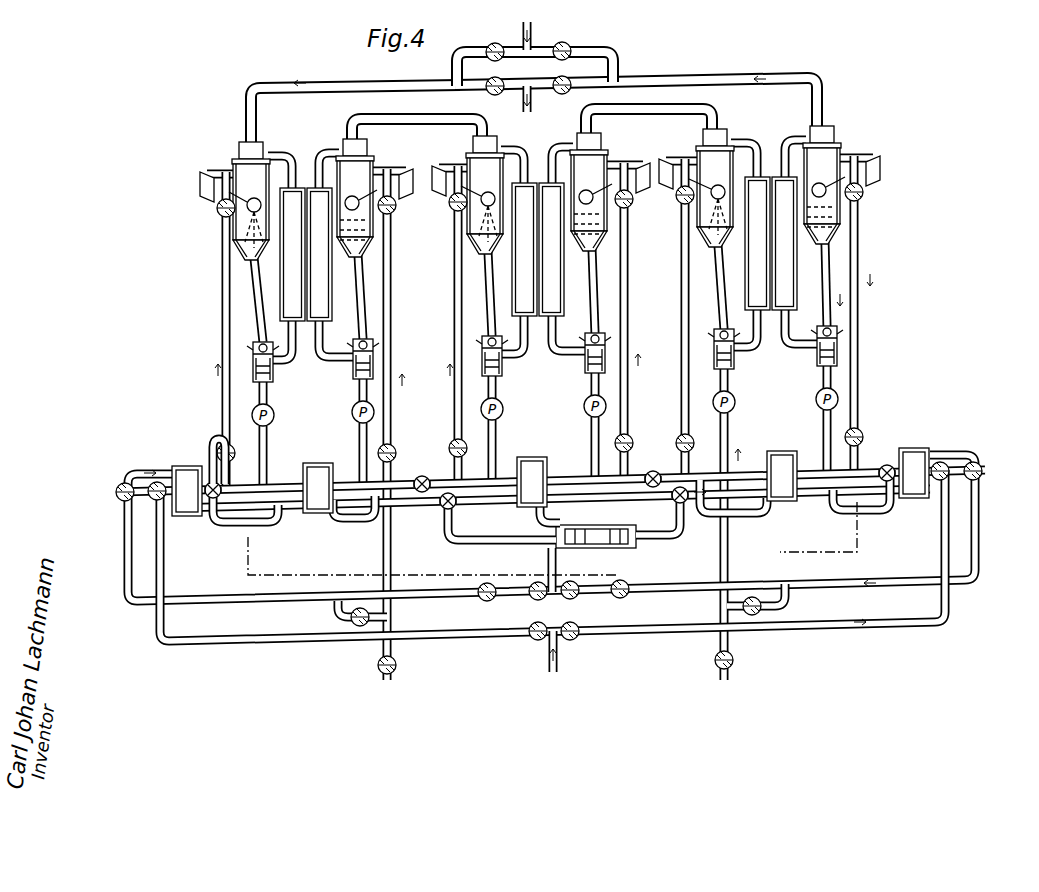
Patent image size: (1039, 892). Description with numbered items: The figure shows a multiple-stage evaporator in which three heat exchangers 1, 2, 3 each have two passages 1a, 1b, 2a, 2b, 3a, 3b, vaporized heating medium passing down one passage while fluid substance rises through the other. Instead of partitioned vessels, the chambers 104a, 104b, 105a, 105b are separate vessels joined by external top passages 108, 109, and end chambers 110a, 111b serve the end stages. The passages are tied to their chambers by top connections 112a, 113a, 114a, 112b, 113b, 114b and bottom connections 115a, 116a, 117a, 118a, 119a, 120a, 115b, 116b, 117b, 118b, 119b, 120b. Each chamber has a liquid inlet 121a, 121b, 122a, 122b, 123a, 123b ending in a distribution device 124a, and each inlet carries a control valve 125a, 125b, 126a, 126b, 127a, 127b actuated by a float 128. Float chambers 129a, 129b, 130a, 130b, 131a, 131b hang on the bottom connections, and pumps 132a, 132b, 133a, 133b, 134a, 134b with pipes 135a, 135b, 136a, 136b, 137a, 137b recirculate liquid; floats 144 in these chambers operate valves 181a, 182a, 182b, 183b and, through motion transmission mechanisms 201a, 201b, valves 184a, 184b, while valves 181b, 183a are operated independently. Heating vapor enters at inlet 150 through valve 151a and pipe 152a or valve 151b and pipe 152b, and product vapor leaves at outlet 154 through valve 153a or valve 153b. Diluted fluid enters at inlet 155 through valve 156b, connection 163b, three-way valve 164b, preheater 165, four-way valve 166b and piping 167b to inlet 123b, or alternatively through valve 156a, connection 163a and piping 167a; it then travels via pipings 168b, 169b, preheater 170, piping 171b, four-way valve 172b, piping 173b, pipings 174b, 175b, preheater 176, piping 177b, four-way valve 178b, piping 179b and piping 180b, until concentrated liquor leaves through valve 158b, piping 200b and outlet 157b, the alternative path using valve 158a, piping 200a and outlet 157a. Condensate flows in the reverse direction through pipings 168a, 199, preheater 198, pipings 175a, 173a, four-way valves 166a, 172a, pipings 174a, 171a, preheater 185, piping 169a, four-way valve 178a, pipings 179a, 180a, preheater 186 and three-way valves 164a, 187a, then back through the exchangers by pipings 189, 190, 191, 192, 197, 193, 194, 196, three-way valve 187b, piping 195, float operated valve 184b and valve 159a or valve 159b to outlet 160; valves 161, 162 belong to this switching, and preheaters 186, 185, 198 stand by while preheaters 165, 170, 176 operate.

The heat exchanger 1 is at (331, 290).
The passage 1a is at (292, 254).
The passage 1b is at (319, 254).
The heat exchanger 2 is at (563, 276).
The passage 2a is at (524, 249).
The passage 2b is at (551, 249).
The heat exchanger 3 is at (796, 274).
The passage 3a is at (757, 243).
The passage 3b is at (784, 243).
The chamber 104a is at (470, 144).
The chamber 104b is at (366, 146).
The chamber 105a is at (704, 140).
The chamber 105b is at (597, 142).
The end chamber 110a is at (236, 150).
The end chamber 111b is at (838, 134).
The top passage 108 is at (430, 119).
The top passage 109 is at (625, 109).
The top connection 112a is at (300, 142).
The top connection 112b is at (336, 142).
The top connection 113a is at (528, 138).
The top connection 113b is at (560, 138).
The top connection 114a is at (760, 134).
The top connection 114b is at (792, 134).
The bottom connection 115a is at (248, 300).
The bottom connection 115b is at (373, 297).
The bottom connection 117a is at (476, 294).
The bottom connection 117b is at (611, 291).
The bottom connection 119a is at (707, 287).
The bottom connection 119b is at (843, 284).
The bottom connection 116a is at (292, 340).
The bottom connection 116b is at (341, 339).
The bottom connection 118a is at (517, 335).
The bottom connection 118b is at (573, 333).
The bottom connection 120a is at (753, 328).
The bottom connection 120b is at (807, 328).
The liquid inlet 121a is at (226, 310).
The liquid inlet 121b is at (389, 280).
The liquid inlet 122a is at (458, 282).
The liquid inlet 122b is at (625, 278).
The liquid inlet 123a is at (686, 280).
The liquid inlet 123b is at (859, 244).
The distribution device 124a is at (236, 156).
The control valve 125a is at (215, 205).
The control valve 125b is at (404, 206).
The control valve 126a is at (447, 214).
The control valve 126b is at (640, 200).
The control valve 127a is at (680, 205).
The control valve 127b is at (876, 176).
The float 128 is at (247, 205).
The float chamber 129a is at (286, 388).
The float chamber 129b is at (341, 387).
The float chamber 130a is at (516, 381).
The float chamber 130b is at (573, 379).
The float chamber 131a is at (748, 375).
The float chamber 131b is at (880, 304).
The pump 132a is at (281, 411).
The pump 132b is at (347, 410).
The pump 133a is at (511, 405).
The pump 133b is at (578, 404).
The pump 134a is at (744, 399).
The pump 134b is at (812, 397).
The pipe 135a is at (268, 436).
The pipe 135b is at (342, 454).
The pipe 136a is at (497, 432).
The pipe 136b is at (573, 448).
The pipe 137a is at (732, 430).
The pipe 137b is at (806, 442).
The float 144 is at (253, 345).
The inlet 150 is at (533, 100).
The valve 151a is at (456, 70).
The valve 151b is at (612, 62).
The pipe 152a is at (318, 88).
The pipe 152b is at (686, 80).
The valve 153a is at (491, 45).
The valve 153b is at (570, 45).
The discharge outlet 154 is at (532, 30).
The inlet 155 is at (559, 660).
The valve 156a is at (535, 640).
The valve 156b is at (571, 640).
The outlet 157a is at (731, 672).
The outlet 157b is at (393, 676).
The valve 158a is at (733, 658).
The valve 158b is at (396, 664).
The valve 159a is at (568, 599).
The valve 159b is at (536, 600).
The discharge outlet 160 is at (566, 553).
The valve 161 is at (350, 612).
The valve 162 is at (764, 603).
The pipe 163a is at (398, 634).
The connection 163b is at (652, 630).
The three-way valve 164a is at (182, 516).
The three-way valve 164b is at (966, 489).
The preheater 165 is at (918, 449).
The four-way valve 166a is at (664, 548).
The four-way valve 166b is at (888, 463).
The pipe 167a is at (676, 440).
The piping 167b is at (880, 440).
The piping 168a is at (727, 507).
The piping 168b is at (888, 512).
The piping 169a is at (266, 470).
The piping 169b is at (790, 466).
The preheater 170 is at (770, 452).
The piping 171a is at (354, 514).
The piping 171b is at (740, 526).
The four-way valve 172a is at (450, 510).
The four-way valve 172b is at (666, 470).
The piping 173a is at (444, 465).
The piping 173b is at (652, 468).
The piping 174a is at (470, 547).
The piping 174b is at (678, 505).
The piping 175a is at (502, 524).
The piping 175b is at (578, 461).
The preheater 176 is at (536, 458).
The piping 177b is at (448, 572).
The four-way valve 178a is at (216, 454).
The four-way valve 178b is at (390, 464).
The piping 179a is at (222, 438).
The piping 179b is at (420, 470).
The piping 180a is at (220, 526).
The piping 180b is at (410, 512).
The valve 181a is at (690, 452).
The valve 181b is at (858, 428).
The valve 182a is at (468, 448).
The valve 182b is at (626, 452).
The valve 183a is at (266, 452).
The valve 183b is at (392, 451).
The valve 184a is at (484, 601).
The float operated valve 184b is at (620, 598).
The preheater 185 is at (325, 457).
The preheater 186 is at (186, 466).
The three-way valve 187a is at (117, 492).
The three-way valve 187b is at (983, 470).
The piping 189 is at (150, 470).
The piping 190 is at (270, 524).
The piping 191 is at (350, 466).
The piping 192 is at (541, 516).
The piping 193 is at (836, 512).
The piping 194 is at (952, 455).
The piping 195 is at (790, 584).
The pipe 196 is at (336, 598).
The piping 197 is at (714, 552).
The preheater 198 is at (568, 519).
The piping 199 is at (647, 516).
The pipe 200a is at (722, 574).
The piping 200b is at (370, 576).
The motion transmission mechanism 201a is at (250, 570).
The motion transmission mechanism 201b is at (858, 534).